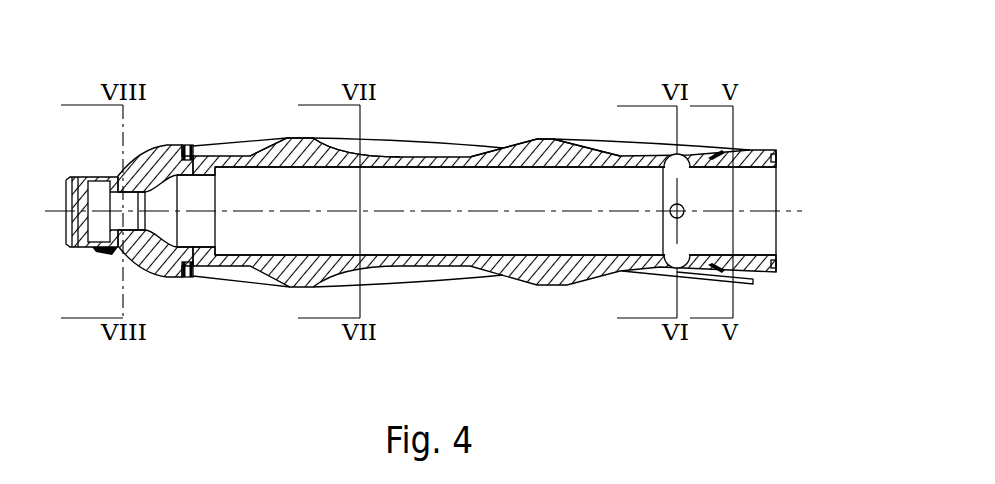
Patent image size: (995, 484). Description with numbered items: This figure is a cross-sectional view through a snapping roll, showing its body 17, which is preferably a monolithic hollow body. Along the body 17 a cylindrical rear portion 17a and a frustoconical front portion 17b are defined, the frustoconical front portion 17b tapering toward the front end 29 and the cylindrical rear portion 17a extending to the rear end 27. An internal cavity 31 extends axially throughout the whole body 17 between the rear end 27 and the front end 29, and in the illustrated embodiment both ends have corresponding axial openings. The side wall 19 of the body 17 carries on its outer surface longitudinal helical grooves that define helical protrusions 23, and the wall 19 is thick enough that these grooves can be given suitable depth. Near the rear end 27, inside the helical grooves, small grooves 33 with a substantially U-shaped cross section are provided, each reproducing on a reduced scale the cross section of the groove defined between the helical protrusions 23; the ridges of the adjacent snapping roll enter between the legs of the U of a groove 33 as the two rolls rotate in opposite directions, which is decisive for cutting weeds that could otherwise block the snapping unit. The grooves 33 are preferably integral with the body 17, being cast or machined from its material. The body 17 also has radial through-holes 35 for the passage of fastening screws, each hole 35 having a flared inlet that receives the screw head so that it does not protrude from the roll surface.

The body 17 is at (435, 201).
The cylindrical rear portion 17a is at (504, 221).
The frustoconical front portion 17b is at (134, 260).
The side wall 19 is at (550, 146).
The helical protrusions 23 is at (430, 147).
The rear end 27 is at (794, 192).
The front end 29 is at (66, 195).
The internal cavity 31 is at (464, 206).
The small grooves 33 is at (713, 152).
The radial through-holes 35 is at (682, 155).